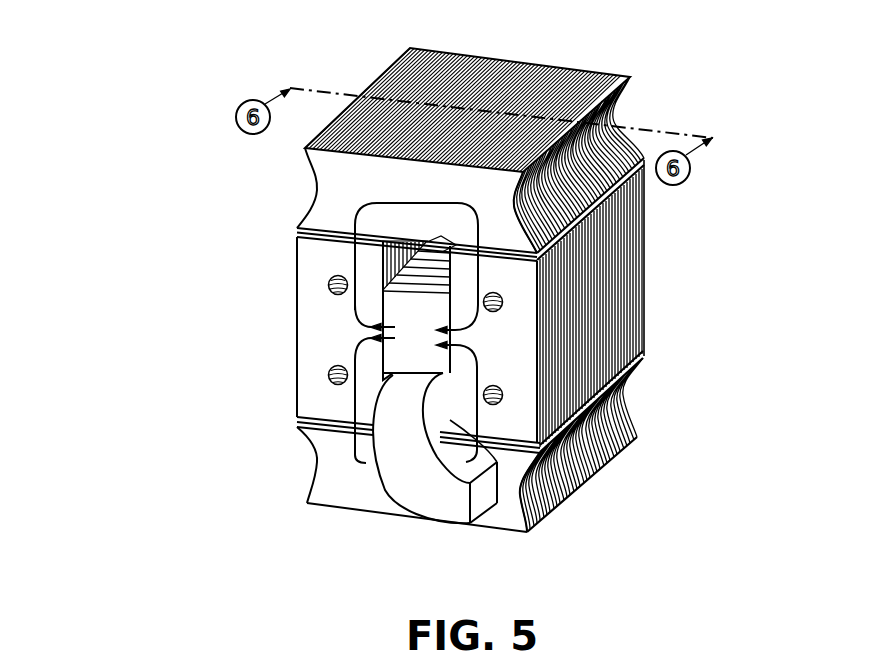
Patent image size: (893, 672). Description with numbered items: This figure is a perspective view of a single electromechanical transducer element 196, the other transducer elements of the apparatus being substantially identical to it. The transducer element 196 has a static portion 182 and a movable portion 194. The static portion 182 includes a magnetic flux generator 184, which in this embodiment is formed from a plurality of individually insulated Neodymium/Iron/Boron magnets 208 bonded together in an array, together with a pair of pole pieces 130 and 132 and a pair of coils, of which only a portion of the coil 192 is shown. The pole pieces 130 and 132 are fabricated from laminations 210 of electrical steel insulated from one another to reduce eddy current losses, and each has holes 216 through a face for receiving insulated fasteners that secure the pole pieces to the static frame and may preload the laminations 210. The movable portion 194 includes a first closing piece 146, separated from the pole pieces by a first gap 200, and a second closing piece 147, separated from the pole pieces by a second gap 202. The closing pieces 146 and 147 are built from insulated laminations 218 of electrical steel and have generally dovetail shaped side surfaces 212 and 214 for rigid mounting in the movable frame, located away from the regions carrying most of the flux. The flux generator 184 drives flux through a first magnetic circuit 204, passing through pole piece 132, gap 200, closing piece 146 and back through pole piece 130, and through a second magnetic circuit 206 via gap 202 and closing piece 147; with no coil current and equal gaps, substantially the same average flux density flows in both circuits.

The electromechanical transducer element 196 is at (334, 75).
The dovetail shaped side surface 214 is at (312, 177).
The dovetail shaped side surface 212 is at (628, 120).
The first closing piece 146 is at (607, 137).
The first gap 200 is at (290, 229).
The second gap 202 is at (290, 420).
The static portion 182 is at (231, 290).
The first magnetic circuit 204 is at (411, 203).
The Neodymium/Iron/Boron magnets 208 is at (417, 281).
The pole piece 130 is at (473, 296).
The pole piece 132 is at (317, 320).
The magnetic flux generator 184 is at (408, 345).
The coil 192 is at (372, 400).
The holes 216 is at (329, 283).
The second magnetic circuit 206 is at (358, 447).
The second closing piece 147 is at (607, 412).
The laminations 210 is at (607, 457).
The laminations 218 is at (583, 480).
The movable portion 194 is at (716, 95).